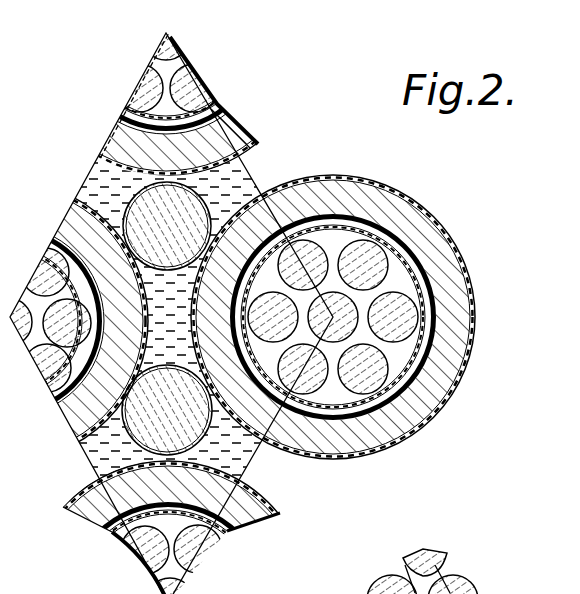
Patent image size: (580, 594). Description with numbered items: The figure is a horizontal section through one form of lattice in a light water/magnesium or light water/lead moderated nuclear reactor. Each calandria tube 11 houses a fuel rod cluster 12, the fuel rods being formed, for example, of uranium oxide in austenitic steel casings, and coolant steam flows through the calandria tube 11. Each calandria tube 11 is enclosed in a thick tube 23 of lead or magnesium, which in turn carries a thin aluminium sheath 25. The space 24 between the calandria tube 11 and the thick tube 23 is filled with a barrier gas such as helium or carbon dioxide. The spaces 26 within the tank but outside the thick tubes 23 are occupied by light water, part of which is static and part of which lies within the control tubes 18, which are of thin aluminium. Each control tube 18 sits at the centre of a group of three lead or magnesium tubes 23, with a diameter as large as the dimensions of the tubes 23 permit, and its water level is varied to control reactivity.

The calandria tube 11 is at (137, 103).
The fuel rod cluster 12 is at (368, 257).
The control tube 18 is at (207, 197).
The thick tube 23 is at (243, 135).
The space 24 is at (64, 236).
The aluminium sheath 25 is at (262, 205).
The space 26 is at (240, 452).